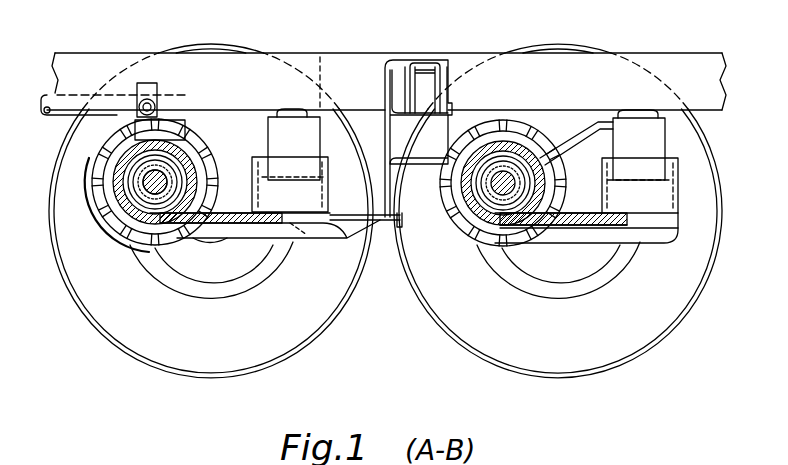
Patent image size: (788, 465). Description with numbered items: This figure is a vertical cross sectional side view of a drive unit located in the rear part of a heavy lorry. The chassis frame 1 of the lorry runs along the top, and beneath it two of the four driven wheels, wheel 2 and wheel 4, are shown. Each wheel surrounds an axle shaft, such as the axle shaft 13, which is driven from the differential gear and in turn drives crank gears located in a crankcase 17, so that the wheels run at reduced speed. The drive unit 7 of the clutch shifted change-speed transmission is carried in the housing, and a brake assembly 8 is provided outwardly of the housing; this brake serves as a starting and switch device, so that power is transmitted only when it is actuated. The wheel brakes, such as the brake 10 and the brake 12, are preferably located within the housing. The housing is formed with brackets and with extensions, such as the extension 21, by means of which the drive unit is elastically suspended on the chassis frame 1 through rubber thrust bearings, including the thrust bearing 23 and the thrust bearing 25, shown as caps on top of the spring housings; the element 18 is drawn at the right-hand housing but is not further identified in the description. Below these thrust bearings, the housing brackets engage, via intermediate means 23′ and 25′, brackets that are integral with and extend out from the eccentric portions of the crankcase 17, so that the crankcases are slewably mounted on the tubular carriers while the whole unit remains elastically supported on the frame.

The chassis frame 1 is at (93, 72).
The driven wheel 2 is at (160, 332).
The driven wheel 4 is at (640, 315).
The drive unit 7 is at (363, 80).
The brake assembly 8 is at (427, 77).
The wheel brake 10 is at (212, 160).
The wheel brake 12 is at (548, 158).
The axle shaft 13 is at (140, 200).
The crankcase 17 is at (450, 217).
The right spring housing 18 is at (637, 180).
The extension 21 is at (263, 113).
The rubber thrust bearing 23 is at (292, 108).
The intermediate means 23′ is at (262, 119).
The rubber thrust bearing 25 is at (640, 112).
The intermediate means 25′ is at (676, 194).